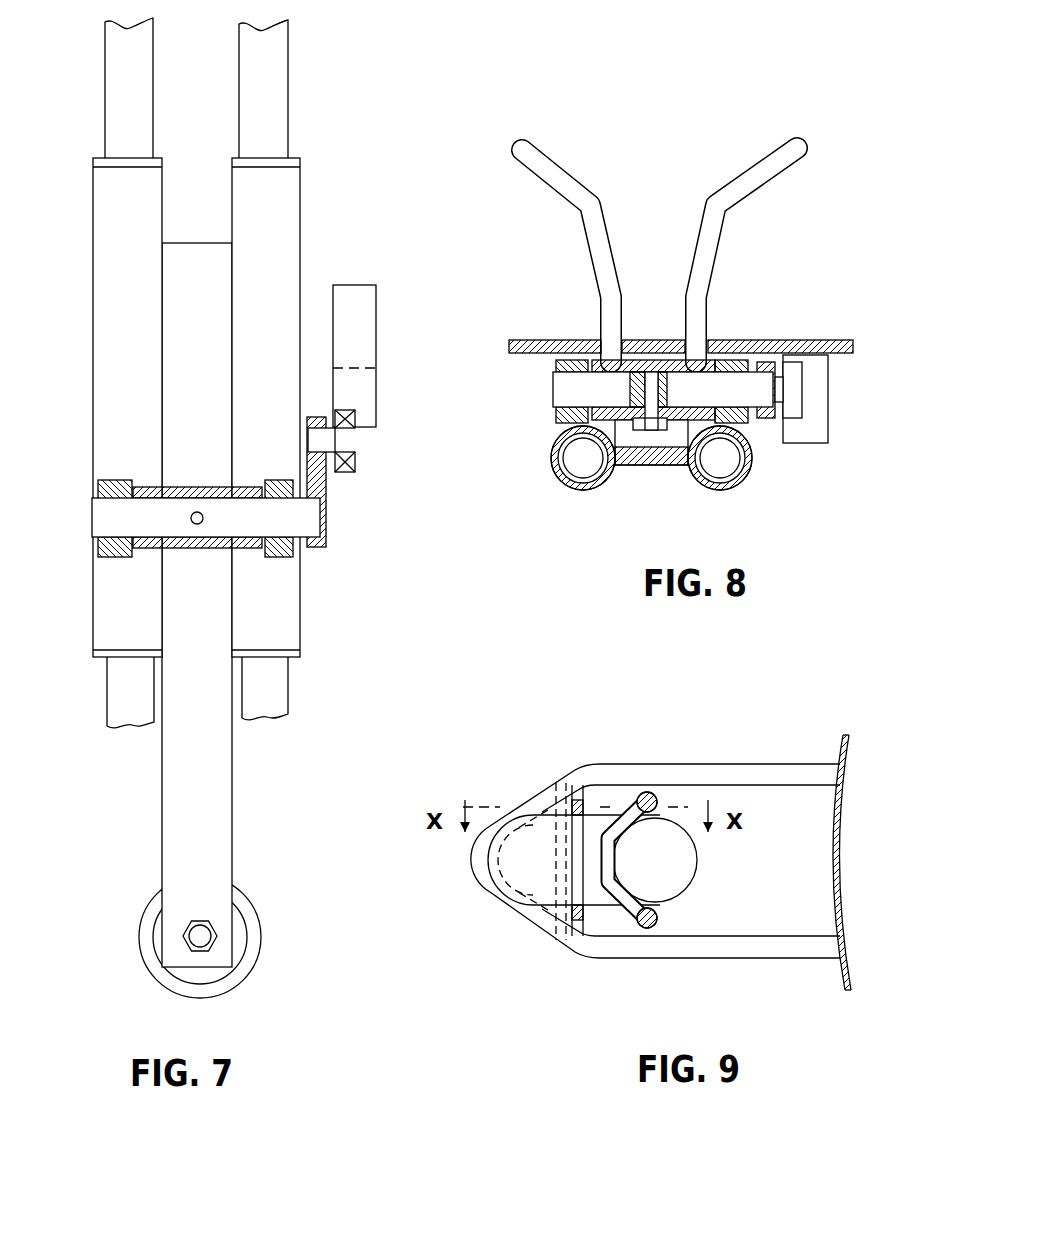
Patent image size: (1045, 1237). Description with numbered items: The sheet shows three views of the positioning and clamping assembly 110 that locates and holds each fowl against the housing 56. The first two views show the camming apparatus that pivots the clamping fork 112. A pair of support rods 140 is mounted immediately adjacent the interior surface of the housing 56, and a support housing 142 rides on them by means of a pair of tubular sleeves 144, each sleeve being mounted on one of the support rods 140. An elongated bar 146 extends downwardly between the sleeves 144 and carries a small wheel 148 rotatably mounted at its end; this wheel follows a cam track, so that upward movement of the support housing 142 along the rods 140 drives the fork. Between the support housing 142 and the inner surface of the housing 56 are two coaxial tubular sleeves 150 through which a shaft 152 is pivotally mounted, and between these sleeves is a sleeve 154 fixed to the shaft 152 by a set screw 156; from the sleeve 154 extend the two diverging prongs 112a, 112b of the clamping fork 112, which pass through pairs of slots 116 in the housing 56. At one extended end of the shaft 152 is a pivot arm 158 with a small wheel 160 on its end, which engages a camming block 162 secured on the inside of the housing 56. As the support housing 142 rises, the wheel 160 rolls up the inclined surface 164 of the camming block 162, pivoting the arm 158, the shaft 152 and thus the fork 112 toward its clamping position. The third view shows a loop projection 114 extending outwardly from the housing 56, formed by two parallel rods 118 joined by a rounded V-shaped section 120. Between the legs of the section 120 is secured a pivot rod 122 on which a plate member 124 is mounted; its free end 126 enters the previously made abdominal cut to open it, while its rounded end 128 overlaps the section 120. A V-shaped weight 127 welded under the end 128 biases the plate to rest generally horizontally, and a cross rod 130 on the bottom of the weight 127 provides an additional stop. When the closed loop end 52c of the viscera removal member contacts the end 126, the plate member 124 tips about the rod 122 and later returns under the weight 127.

In FIG. 9, the closed end of the loop 52c is at (613, 848).
In FIG. 8, the housing 56 is at (533, 340).
In FIG. 9, the housing 56 is at (848, 738).
In FIG. 8, the positioning and clamping assembly 110 is at (820, 112).
In FIG. 8, the clamping fork 112 is at (566, 152).
In FIG. 8, the prong of clamping fork 112a is at (580, 185).
In FIG. 8, the prong of clamping fork 112b is at (750, 173).
In FIG. 9, the loop projection 114 is at (680, 734).
In FIG. 8, the slots 116 is at (598, 335).
In FIG. 9, the parallel rods 118 is at (727, 775).
In FIG. 9, the rounded V-shaped section 120 is at (537, 797).
In FIG. 9, the pivot rod 122 is at (557, 787).
In FIG. 9, the plate member 124 is at (530, 882).
In FIG. 9, the free end of plate member 126 is at (680, 878).
In FIG. 9, the V-shaped weight 127 is at (523, 870).
In FIG. 9, the rounded end of plate member 128 is at (488, 853).
In FIG. 9, the cross rod 130 is at (582, 934).
In FIG. 7, the support rods 140 is at (140, 45).
In FIG. 8, the support rods 140 is at (555, 462).
In FIG. 7, the support housing 142 is at (118, 294).
In FIG. 8, the support housing 142 is at (682, 480).
In FIG. 7, the tubular sleeves 144 is at (115, 197).
In FIG. 8, the tubular sleeves 144 is at (558, 452).
In FIG. 7, the elongated bar 146 is at (220, 782).
In FIG. 8, the elongated bar 146 is at (627, 466).
In FIG. 7, the small wheel 148 is at (250, 910).
In FIG. 7, the coaxial tubular sleeves 150 is at (98, 485).
In FIG. 8, the coaxial tubular sleeves 150 is at (556, 364).
In FIG. 7, the shaft 152 is at (102, 518).
In FIG. 8, the shaft 152 is at (560, 390).
In FIG. 7, the sleeve 154 is at (193, 487).
In FIG. 8, the sleeve 154 is at (648, 358).
In FIG. 7, the set screw 156 is at (204, 518).
In FIG. 8, the set screw 156 is at (652, 432).
In FIG. 7, the pivot arm 158 is at (327, 488).
In FIG. 8, the pivot arm 158 is at (803, 415).
In FIG. 7, the small wheel 160 is at (357, 458).
In FIG. 8, the small wheel 160 is at (795, 390).
In FIG. 7, the camming block 162 is at (365, 335).
In FIG. 8, the camming block 162 is at (830, 442).
In FIG. 7, the inclined surface 164 is at (366, 393).
In FIG. 8, the inclined surface 164 is at (820, 368).